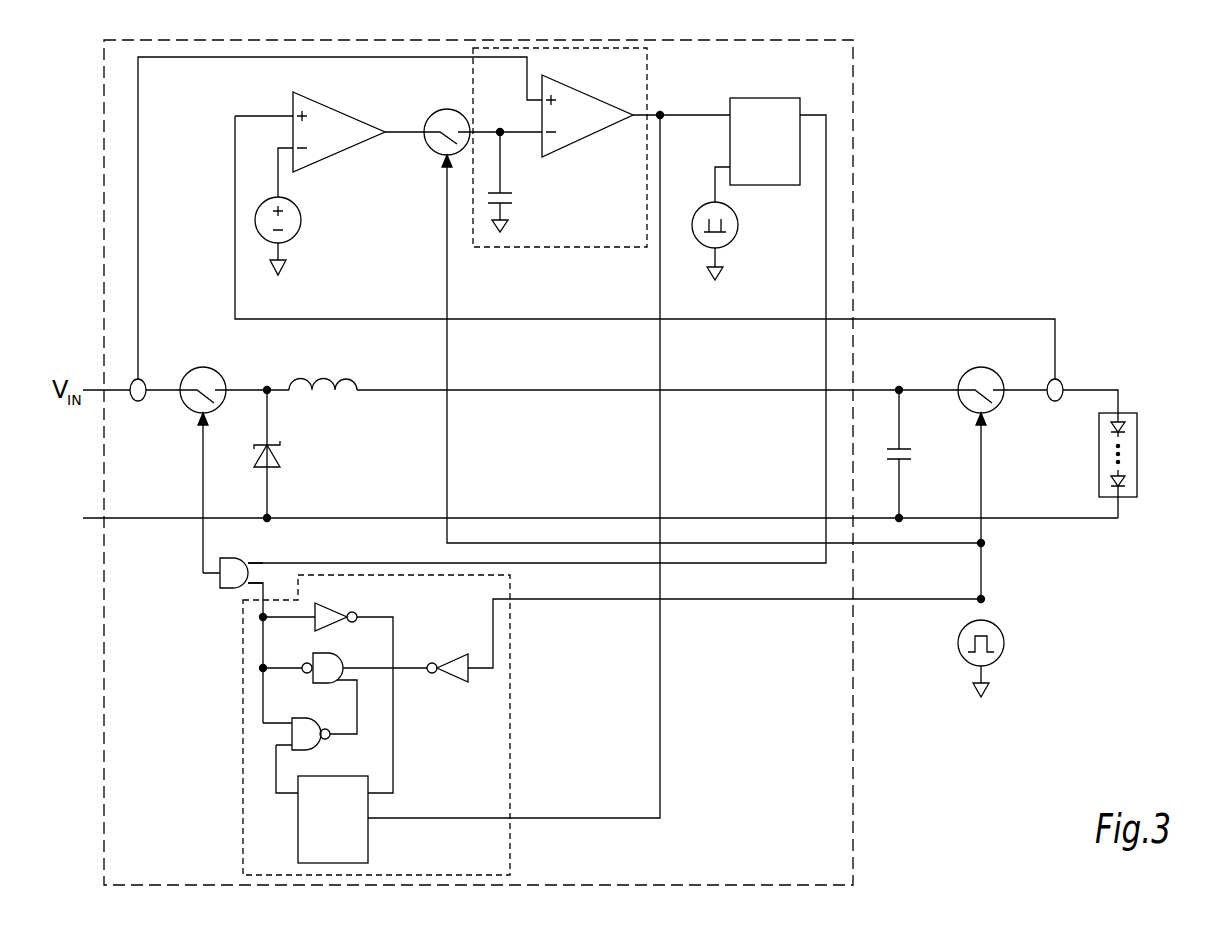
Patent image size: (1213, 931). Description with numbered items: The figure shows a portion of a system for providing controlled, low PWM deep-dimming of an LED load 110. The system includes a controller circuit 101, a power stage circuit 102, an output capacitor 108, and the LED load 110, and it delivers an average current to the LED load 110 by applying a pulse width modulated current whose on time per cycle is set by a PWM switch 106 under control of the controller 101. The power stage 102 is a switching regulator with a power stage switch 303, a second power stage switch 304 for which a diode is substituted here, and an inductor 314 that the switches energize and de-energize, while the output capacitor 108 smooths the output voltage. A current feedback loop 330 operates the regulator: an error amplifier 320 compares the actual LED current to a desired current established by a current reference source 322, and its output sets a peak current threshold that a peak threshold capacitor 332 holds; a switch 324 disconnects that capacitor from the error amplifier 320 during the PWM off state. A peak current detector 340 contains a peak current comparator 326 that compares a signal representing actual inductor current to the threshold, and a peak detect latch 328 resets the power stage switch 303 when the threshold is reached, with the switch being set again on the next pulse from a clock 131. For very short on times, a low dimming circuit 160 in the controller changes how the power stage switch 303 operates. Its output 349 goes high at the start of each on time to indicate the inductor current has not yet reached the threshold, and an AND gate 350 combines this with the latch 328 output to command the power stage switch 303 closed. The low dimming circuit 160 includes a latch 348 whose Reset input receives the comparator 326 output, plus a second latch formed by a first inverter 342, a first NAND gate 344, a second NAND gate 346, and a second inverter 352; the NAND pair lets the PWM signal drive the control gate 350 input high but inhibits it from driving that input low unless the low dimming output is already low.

The power stage circuit 102 is at (855, 101).
The current feedback loop 330 is at (235, 147).
The error amplifier 320 is at (339, 113).
The current reference source 322 is at (302, 222).
The switch 324 is at (447, 109).
The peak current detector 340 is at (560, 248).
The peak current comparator 326 is at (590, 96).
The peak threshold capacitor 332 is at (508, 193).
The peak detect latch 328 is at (765, 98).
The clock 131 is at (739, 226).
The power stage switch 303 is at (203, 366).
The inductor 314 is at (323, 378).
The power stage switch 304 is at (280, 444).
The PWM switch 106 is at (980, 366).
The output capacitor 108 is at (911, 450).
The LED load 110 is at (1099, 457).
The controller circuit 101 is at (1005, 644).
The AND gate 350 is at (222, 592).
The output of the low dimming circuit 349 is at (272, 592).
The low dimming circuit 160 is at (512, 722).
The second inverter 352 is at (334, 611).
The first NAND gate 344 is at (317, 655).
The first inverter 342 is at (445, 652).
The second NAND gate 346 is at (313, 722).
The latch 348 is at (343, 776).